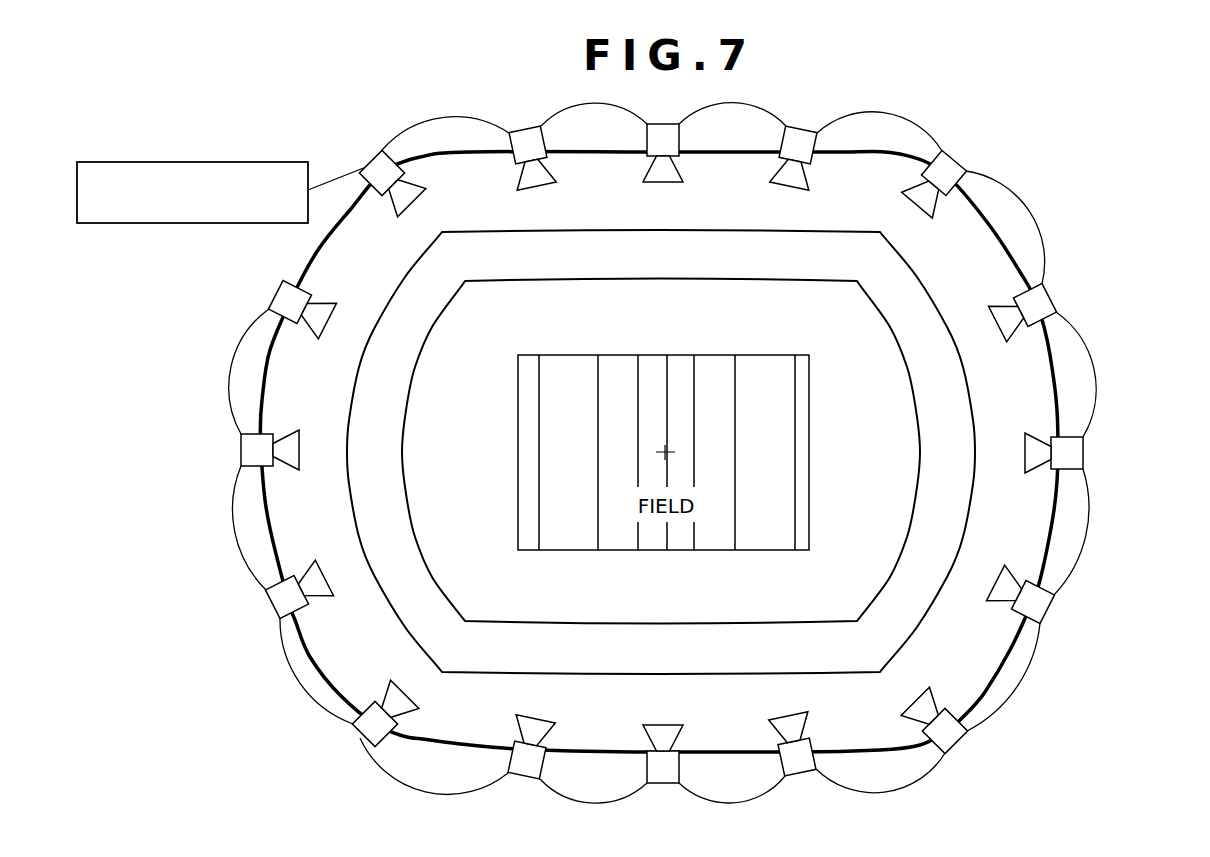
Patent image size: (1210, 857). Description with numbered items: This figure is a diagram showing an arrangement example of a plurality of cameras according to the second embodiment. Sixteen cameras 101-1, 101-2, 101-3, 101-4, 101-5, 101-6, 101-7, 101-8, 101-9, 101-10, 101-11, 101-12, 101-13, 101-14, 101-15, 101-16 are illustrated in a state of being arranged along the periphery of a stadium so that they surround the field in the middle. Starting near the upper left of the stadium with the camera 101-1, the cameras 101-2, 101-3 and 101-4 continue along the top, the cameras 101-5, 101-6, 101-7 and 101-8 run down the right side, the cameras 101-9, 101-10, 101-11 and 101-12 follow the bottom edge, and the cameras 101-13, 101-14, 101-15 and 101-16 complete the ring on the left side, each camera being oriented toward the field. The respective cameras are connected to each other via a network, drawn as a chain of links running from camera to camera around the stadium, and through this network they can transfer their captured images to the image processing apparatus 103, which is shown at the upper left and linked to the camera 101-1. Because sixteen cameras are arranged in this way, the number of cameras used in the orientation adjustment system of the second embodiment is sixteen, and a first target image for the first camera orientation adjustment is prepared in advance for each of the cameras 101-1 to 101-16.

The image processing apparatus 103 is at (165, 162).
The camera 101-1 is at (370, 160).
The camera 101-2 is at (545, 140).
The camera 101-3 is at (680, 140).
The camera 101-4 is at (815, 148).
The camera 101-5 is at (962, 185).
The camera 101-6 is at (1052, 314).
The camera 101-7 is at (1078, 437).
The camera 101-8 is at (1050, 592).
The camera 101-9 is at (962, 724).
The camera 101-10 is at (783, 763).
The camera 101-11 is at (648, 768).
The camera 101-12 is at (510, 762).
The camera 101-13 is at (356, 728).
The camera 101-14 is at (270, 597).
The camera 101-15 is at (243, 438).
The camera 101-16 is at (283, 285).